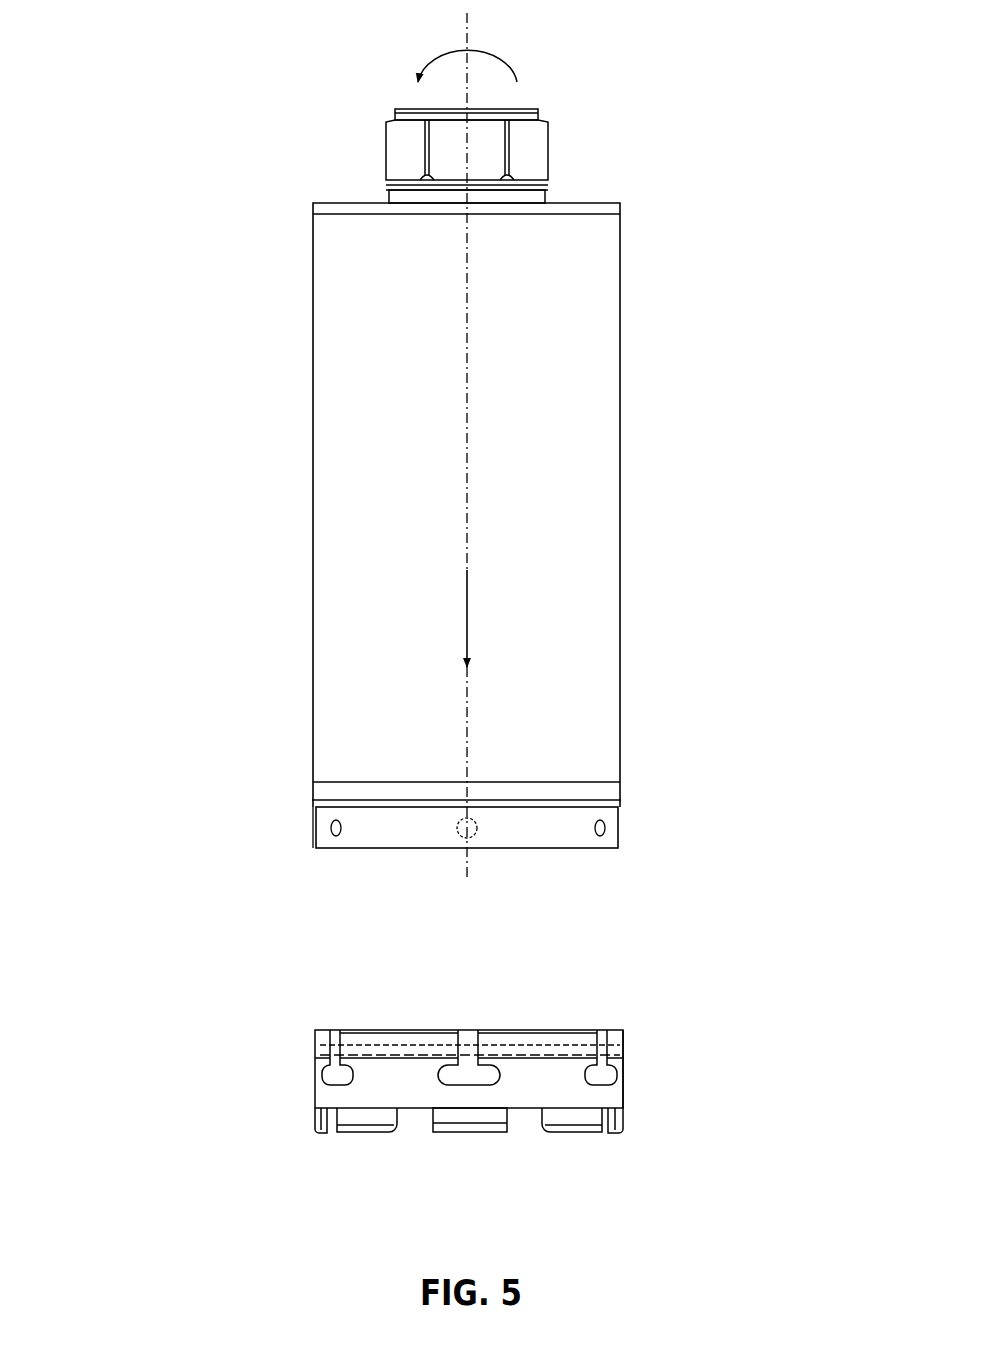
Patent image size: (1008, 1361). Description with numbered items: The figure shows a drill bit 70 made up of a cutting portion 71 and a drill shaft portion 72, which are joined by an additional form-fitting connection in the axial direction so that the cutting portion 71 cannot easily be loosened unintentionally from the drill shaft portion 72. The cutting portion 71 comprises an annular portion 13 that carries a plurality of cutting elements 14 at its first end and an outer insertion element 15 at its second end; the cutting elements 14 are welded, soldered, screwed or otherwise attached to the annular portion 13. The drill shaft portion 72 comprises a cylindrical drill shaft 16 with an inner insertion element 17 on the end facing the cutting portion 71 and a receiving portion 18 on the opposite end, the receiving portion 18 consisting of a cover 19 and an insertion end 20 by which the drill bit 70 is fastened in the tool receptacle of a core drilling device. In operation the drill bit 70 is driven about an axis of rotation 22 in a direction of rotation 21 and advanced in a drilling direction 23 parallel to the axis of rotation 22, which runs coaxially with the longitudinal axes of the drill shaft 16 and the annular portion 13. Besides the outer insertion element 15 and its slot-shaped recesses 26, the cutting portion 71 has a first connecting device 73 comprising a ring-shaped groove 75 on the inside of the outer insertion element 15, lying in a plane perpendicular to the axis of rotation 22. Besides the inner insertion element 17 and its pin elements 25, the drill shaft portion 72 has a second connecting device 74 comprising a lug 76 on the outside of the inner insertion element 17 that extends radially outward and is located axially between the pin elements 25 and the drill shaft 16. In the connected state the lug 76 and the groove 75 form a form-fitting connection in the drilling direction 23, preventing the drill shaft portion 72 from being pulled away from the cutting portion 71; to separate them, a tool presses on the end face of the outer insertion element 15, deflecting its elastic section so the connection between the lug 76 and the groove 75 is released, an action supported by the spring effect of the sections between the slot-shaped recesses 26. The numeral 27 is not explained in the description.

The annular portion 13 is at (325, 1097).
The cutting elements 14 is at (324, 1128).
The outer insertion element 15 is at (624, 1068).
The drill shaft 16 is at (608, 468).
The inner insertion element 17 is at (614, 822).
The receiving portion 18 is at (743, 142).
The cover 19 is at (336, 203).
The insertion end 20 is at (537, 150).
The direction of rotation 21 is at (467, 71).
The axis of rotation 22 is at (472, 326).
The drilling direction 23 is at (468, 613).
The pin elements 25 is at (336, 838).
The slot-shaped recesses 26 is at (336, 1031).
The flange edge 27 is at (313, 823).
The drill bit 70 is at (246, 117).
The cutting portion 71 is at (188, 1041).
The drill shaft portion 72 is at (183, 404).
The first connecting device 73 is at (528, 1033).
The second connecting device 74 is at (600, 790).
The groove 75 is at (395, 1045).
The lug 76 is at (367, 805).